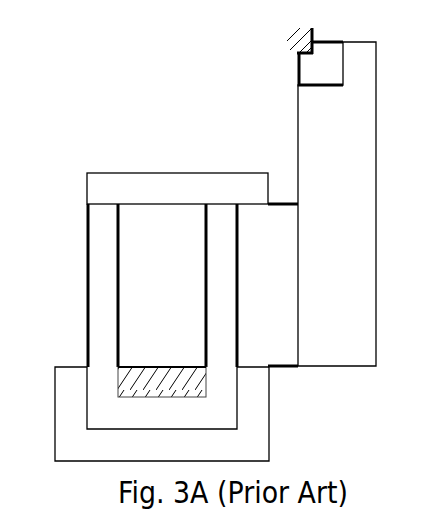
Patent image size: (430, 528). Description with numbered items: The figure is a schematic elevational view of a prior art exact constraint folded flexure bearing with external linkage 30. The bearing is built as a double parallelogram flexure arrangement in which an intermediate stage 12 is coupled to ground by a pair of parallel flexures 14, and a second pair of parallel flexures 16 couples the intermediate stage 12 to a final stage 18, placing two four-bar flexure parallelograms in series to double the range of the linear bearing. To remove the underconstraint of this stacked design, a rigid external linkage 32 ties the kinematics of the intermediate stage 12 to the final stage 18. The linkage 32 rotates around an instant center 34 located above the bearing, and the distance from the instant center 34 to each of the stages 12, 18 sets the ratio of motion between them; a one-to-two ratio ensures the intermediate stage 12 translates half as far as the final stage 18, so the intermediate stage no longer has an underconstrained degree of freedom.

The exact constraint folded flexure bearing with external linkage 30 is at (78, 103).
The intermediate stage 12 is at (170, 193).
The parallel flexures 14 is at (122, 272).
The parallel flexures 16 is at (86, 278).
The final stage 18 is at (172, 451).
The external linkage 32 is at (352, 260).
The instant center 34 is at (303, 46).